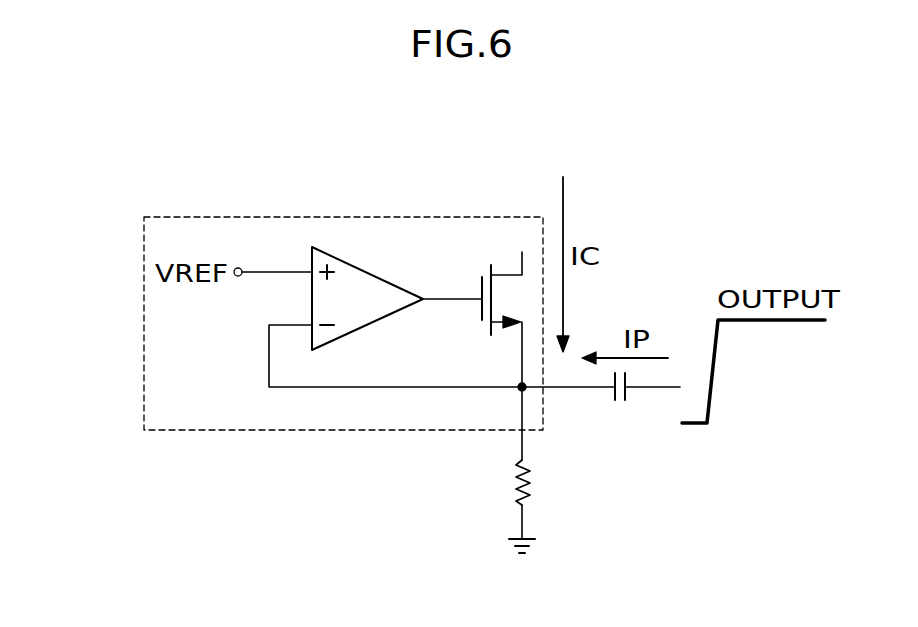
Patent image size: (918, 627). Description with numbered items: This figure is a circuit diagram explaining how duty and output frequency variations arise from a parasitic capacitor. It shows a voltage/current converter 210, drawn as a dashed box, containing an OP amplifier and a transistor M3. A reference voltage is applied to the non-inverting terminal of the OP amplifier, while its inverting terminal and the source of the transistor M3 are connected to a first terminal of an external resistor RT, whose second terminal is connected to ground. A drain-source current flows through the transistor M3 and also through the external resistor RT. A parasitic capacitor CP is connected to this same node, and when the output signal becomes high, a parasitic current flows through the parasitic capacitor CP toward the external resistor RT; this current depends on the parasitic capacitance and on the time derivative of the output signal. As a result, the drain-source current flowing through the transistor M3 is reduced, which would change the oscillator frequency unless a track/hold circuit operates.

The voltage/current converter 210 is at (143, 313).
The transistor M3 is at (479, 319).
The parasitic capacitor CP is at (642, 403).
The external resistor RT is at (544, 470).